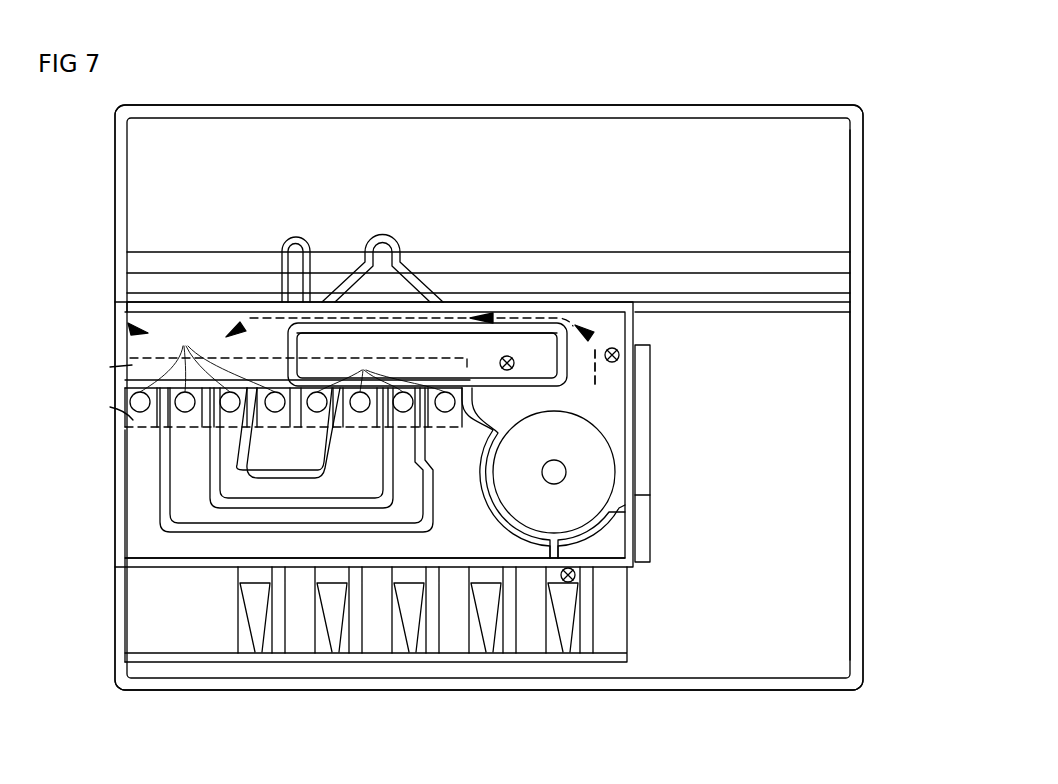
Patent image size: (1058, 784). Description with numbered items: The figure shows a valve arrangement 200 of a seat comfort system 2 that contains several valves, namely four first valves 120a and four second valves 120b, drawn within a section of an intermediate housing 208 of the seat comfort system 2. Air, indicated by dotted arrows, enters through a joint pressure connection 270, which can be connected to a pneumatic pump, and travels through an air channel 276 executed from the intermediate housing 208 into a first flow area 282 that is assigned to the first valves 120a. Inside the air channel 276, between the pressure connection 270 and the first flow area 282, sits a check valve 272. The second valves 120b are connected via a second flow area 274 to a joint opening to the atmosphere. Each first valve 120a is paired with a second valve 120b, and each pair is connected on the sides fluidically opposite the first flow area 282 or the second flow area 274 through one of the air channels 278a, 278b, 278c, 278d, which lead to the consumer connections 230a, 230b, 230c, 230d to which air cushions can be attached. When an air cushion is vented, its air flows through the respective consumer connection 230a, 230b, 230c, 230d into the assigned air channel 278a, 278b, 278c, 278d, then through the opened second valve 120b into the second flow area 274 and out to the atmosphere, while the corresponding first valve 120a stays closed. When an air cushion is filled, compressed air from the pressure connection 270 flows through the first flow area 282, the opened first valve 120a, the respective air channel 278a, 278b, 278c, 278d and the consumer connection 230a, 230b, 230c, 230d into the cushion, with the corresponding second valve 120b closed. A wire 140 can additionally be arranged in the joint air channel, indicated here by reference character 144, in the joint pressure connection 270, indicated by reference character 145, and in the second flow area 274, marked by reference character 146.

The seat comfort system 2 is at (694, 80).
The valve arrangement 200 is at (595, 80).
The intermediate housing 208 is at (836, 185).
The first valves 120a is at (297, 356).
The second valves 120b is at (427, 357).
The wire 140 is at (622, 398).
The wire in joint air channel 144 is at (619, 356).
The wire in joint pressure connection 145 is at (577, 578).
The wire in second flow area 146 is at (507, 356).
The check valve 272 is at (597, 418).
The second flow area 274 is at (455, 345).
The air channel 276 is at (598, 325).
The air channel 278a is at (263, 448).
The air channel 278b is at (225, 487).
The air channel 278c is at (183, 512).
The air channel 278d is at (143, 543).
The first flow area 282 is at (128, 327).
The consumer connection 230a is at (257, 640).
The consumer connection 230b is at (334, 640).
The consumer connection 230c is at (411, 640).
The consumer connection 230d is at (488, 640).
The joint pressure connection 270 is at (566, 640).